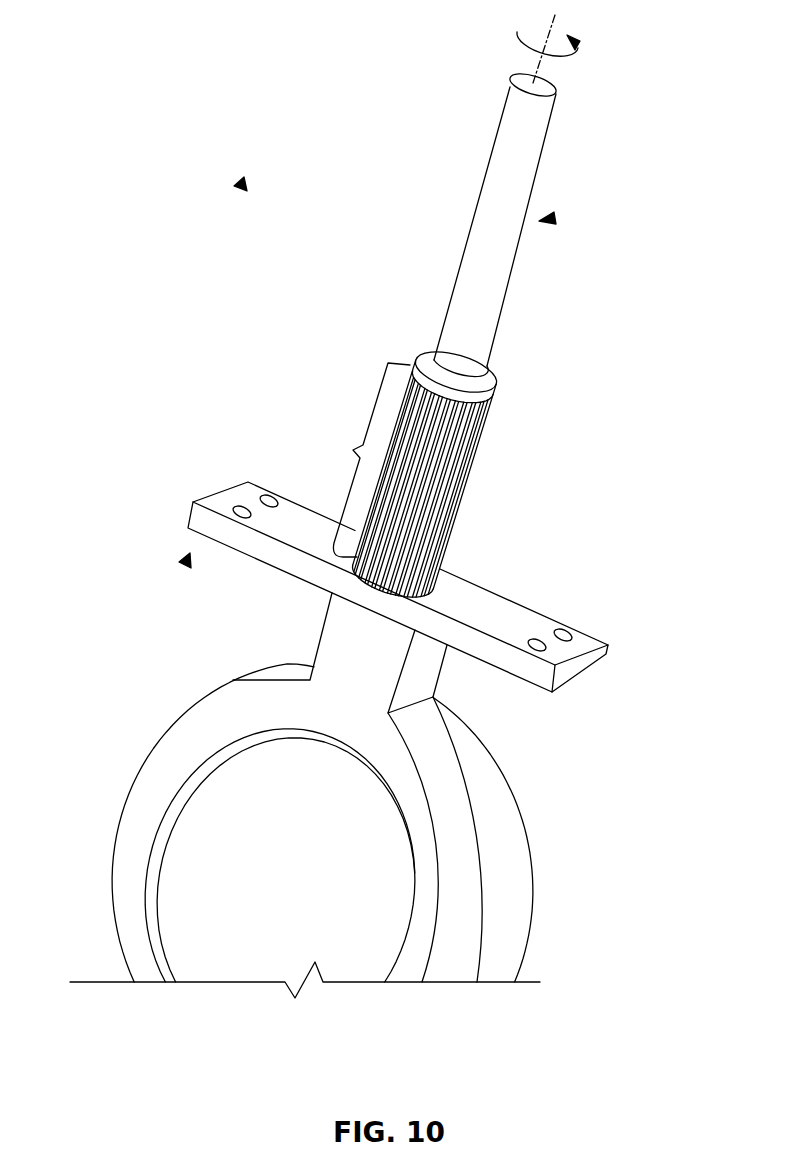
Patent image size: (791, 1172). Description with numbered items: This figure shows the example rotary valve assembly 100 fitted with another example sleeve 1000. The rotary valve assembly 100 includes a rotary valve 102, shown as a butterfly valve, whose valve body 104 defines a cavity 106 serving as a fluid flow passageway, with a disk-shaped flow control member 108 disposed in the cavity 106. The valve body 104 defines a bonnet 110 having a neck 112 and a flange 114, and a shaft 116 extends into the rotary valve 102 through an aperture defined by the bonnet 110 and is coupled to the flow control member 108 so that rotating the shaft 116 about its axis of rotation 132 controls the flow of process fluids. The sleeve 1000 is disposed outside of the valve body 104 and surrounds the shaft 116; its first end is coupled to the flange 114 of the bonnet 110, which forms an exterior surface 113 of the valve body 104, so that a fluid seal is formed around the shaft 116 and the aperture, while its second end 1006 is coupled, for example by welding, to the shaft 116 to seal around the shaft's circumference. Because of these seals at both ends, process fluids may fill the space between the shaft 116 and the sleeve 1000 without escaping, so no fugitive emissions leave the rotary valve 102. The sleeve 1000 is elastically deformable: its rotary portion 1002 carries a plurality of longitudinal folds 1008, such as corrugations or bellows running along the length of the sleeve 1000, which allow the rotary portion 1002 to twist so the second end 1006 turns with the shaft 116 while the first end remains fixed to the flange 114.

The rotary valve assembly 100 is at (243, 184).
The rotary valve 102 is at (188, 562).
The valve body 104 is at (207, 712).
The cavity 106 is at (412, 947).
The flow control member 108 is at (365, 848).
The bonnet 110 is at (348, 655).
The neck 112 is at (442, 667).
The exterior surface 113 is at (508, 616).
The flange 114 is at (580, 668).
The shaft 116 is at (510, 125).
The axis of rotation 132 is at (540, 63).
The sleeve 1000 is at (548, 218).
The rotary portion 1002 is at (300, 602).
The second end 1006 is at (493, 378).
The longitudinal folds 1008 is at (463, 467).